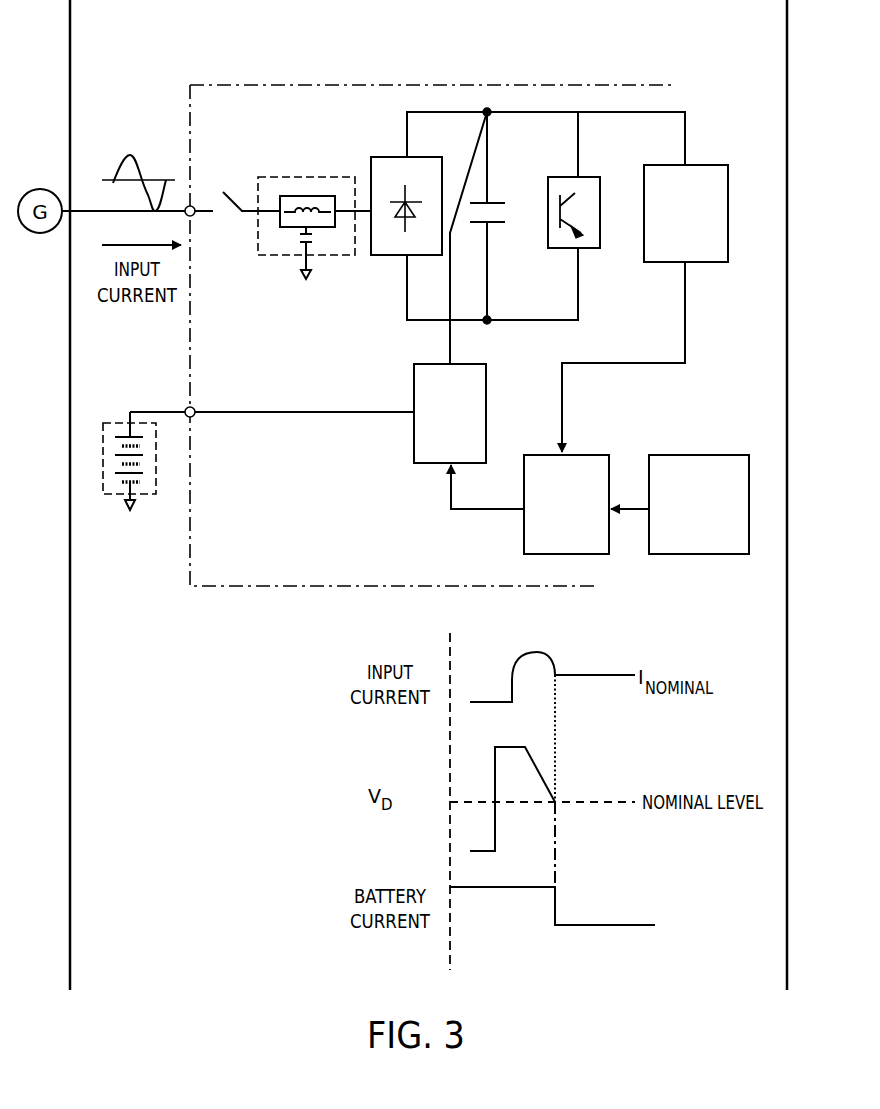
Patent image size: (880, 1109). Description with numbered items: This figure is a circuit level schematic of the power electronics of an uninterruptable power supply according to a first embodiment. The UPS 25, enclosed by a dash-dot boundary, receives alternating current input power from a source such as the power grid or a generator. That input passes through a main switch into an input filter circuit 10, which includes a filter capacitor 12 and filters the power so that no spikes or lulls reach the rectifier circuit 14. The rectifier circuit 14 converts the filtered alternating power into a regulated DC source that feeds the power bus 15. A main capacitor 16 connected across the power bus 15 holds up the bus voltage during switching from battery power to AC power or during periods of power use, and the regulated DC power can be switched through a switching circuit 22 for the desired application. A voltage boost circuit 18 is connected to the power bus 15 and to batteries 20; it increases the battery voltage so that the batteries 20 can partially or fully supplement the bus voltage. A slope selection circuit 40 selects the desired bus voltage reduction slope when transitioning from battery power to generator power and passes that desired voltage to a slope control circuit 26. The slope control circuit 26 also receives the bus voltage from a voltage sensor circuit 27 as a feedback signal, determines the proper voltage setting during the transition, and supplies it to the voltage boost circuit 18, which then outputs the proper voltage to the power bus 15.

The input filter circuit 10 is at (308, 174).
The filter capacitor 12 is at (296, 244).
The rectifier circuit 14 is at (392, 157).
The power bus 15 is at (553, 110).
The main capacitor 16 is at (489, 199).
The voltage boost circuit 18 is at (432, 465).
The batteries 20 is at (113, 420).
The switching circuit 22 is at (585, 175).
The UPS 25 is at (634, 70).
The slope control circuit 26 is at (581, 453).
The voltage sensor circuit 27 is at (704, 163).
The slope selection circuit 40 is at (704, 453).